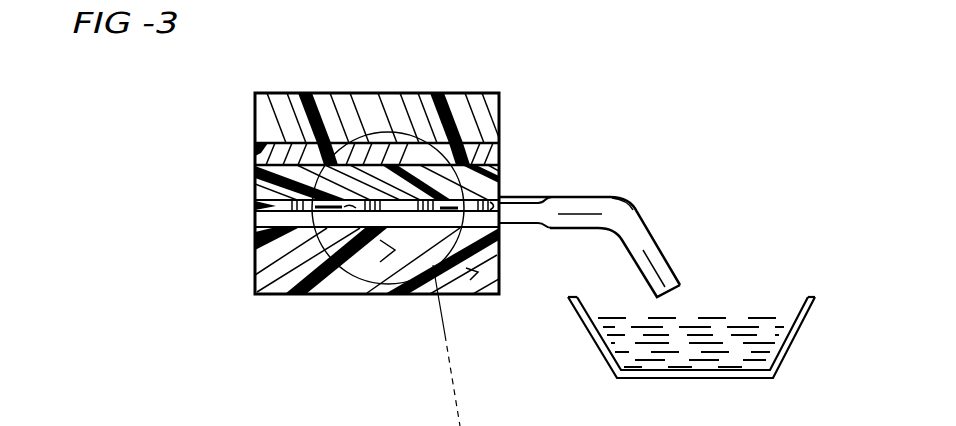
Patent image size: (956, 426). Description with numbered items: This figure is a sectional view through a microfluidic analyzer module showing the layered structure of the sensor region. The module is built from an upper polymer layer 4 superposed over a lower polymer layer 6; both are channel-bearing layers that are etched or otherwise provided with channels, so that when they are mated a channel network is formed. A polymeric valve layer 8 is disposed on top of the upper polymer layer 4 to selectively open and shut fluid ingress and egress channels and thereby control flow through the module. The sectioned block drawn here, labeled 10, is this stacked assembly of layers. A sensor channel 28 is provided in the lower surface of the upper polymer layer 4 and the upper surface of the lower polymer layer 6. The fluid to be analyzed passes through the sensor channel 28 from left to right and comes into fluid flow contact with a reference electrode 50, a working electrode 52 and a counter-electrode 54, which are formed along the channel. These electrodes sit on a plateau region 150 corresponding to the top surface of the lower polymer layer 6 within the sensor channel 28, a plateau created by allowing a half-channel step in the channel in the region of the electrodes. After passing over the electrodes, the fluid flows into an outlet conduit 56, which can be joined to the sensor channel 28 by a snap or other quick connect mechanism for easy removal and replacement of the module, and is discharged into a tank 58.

The block assembly 10 is at (487, 92).
The polymeric valve layer 8 is at (250, 156).
The lower polymer layer 6 is at (318, 287).
The upper polymer layer 4 is at (500, 178).
The sensor channel 28 is at (257, 207).
The reference electrode 50 is at (362, 222).
The working electrode 52 is at (398, 258).
The counter-electrode 54 is at (472, 273).
The outlet conduit 56 is at (633, 208).
The tank 58 is at (597, 352).
The plateau region 150 is at (348, 284).